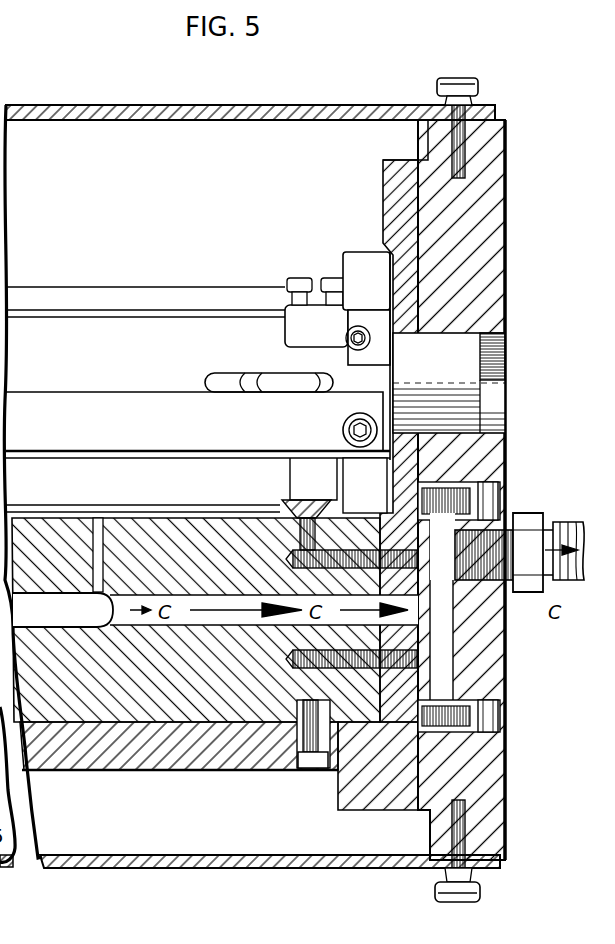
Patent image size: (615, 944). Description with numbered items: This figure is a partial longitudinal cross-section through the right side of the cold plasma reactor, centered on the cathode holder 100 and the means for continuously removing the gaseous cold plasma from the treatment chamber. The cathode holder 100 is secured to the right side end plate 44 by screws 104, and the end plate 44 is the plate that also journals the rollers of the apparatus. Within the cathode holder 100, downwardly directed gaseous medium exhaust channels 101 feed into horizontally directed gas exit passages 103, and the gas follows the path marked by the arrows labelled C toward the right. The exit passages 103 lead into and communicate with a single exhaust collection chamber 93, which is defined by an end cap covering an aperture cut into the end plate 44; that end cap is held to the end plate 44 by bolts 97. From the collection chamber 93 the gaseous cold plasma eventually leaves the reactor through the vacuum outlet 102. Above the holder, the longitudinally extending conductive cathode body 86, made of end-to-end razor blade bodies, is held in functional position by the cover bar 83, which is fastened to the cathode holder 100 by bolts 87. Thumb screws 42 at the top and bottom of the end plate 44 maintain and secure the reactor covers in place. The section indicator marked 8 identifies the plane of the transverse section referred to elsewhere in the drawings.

The thumb screws 42 is at (460, 80).
The right side end plate 44 is at (507, 189).
The cover bar 83 is at (95, 757).
The conductive cathode body 86 is at (100, 560).
The bolts 87 is at (14, 553).
The exhaust collection chamber 93 is at (510, 703).
The bolts 97 is at (503, 730).
The cathode holder 100 is at (198, 570).
The gaseous medium exhaust channels 101 is at (40, 553).
The vacuum outlet 102 is at (556, 572).
The gas exit passages 103 is at (106, 616).
The screws 104 is at (443, 662).
The section line 8 is at (160, 380).